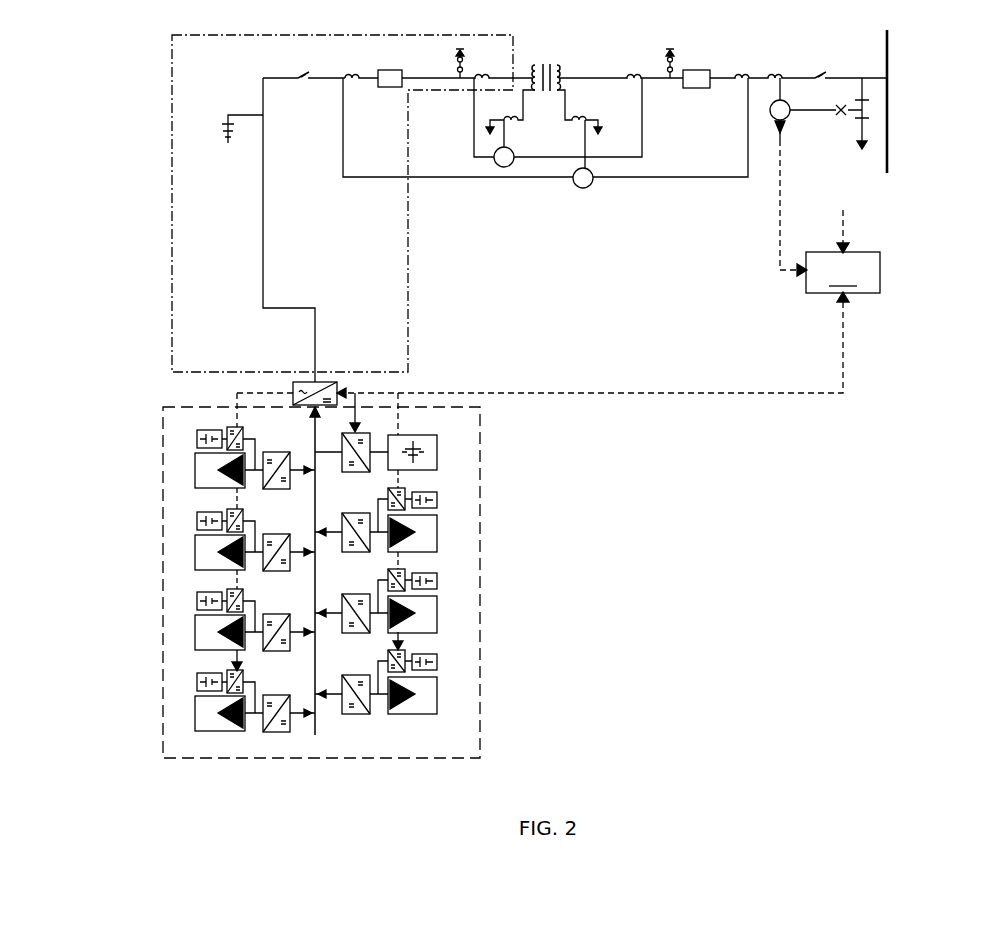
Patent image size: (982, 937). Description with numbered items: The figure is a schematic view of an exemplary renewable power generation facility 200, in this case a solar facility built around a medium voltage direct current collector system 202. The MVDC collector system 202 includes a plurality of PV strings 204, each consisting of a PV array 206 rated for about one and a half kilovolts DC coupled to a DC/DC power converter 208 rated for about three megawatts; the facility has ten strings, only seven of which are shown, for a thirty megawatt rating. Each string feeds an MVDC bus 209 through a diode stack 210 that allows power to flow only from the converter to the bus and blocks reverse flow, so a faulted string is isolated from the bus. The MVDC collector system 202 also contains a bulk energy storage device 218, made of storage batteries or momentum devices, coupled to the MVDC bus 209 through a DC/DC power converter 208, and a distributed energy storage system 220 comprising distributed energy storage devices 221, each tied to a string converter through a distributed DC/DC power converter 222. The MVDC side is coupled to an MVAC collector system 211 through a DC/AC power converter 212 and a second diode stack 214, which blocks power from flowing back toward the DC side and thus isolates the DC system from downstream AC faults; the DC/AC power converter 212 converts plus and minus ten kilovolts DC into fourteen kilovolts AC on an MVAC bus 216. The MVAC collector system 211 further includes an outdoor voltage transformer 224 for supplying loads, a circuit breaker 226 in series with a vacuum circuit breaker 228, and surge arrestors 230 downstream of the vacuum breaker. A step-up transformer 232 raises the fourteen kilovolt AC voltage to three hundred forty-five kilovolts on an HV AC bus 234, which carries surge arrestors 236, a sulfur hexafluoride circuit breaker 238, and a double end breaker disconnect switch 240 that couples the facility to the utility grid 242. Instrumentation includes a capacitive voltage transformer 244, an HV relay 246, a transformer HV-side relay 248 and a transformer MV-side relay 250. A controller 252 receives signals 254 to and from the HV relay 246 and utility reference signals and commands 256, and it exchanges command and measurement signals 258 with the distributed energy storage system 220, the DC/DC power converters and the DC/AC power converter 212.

The renewable power generation facility 200 is at (150, 192).
The medium voltage direct current (MVDC) collector system 202 is at (163, 440).
The PV string 204 is at (364, 724).
The PV array 206 is at (430, 612).
The DC/DC power converter 208 is at (337, 712).
The MVDC bus 209 is at (312, 736).
The diode stack 210 is at (306, 480).
The MVAC collector system 211 is at (172, 68).
The DC/AC power converter 212 is at (323, 382).
The diode stack 214 is at (305, 416).
The MVAC bus 216 is at (290, 308).
The bulk energy storage device 218 is at (438, 452).
The distributed energy storage system 220 is at (449, 554).
The distributed energy storage device 221 is at (440, 665).
The distributed DC/DC power converter 222 is at (386, 665).
The outdoor voltage transformer 224 is at (226, 118).
The circuit breaker 226 is at (303, 82).
The vacuum circuit breaker 228 is at (392, 70).
The surge arrestors 230 is at (463, 52).
The step-up transformer 232 is at (540, 64).
The HV AC bus 234 is at (606, 77).
The surge arrestors 236 is at (666, 50).
The sulfur hexafluoride (SF6) circuit breaker 238 is at (698, 70).
The double end breaker disconnect switch 240 is at (821, 76).
The utility grid 242 is at (889, 113).
The capacitive voltage transformer (CCVT) 244 is at (840, 113).
The HV relay 246 is at (780, 121).
The transformer HV-side relay 248 is at (583, 188).
The transformer MV-side relay 250 is at (503, 167).
The controller 252 is at (843, 272).
The signals to and from HV relay 254 is at (787, 180).
The utility reference signals and commands 256 is at (845, 213).
The command and measurement signals 258 is at (845, 345).